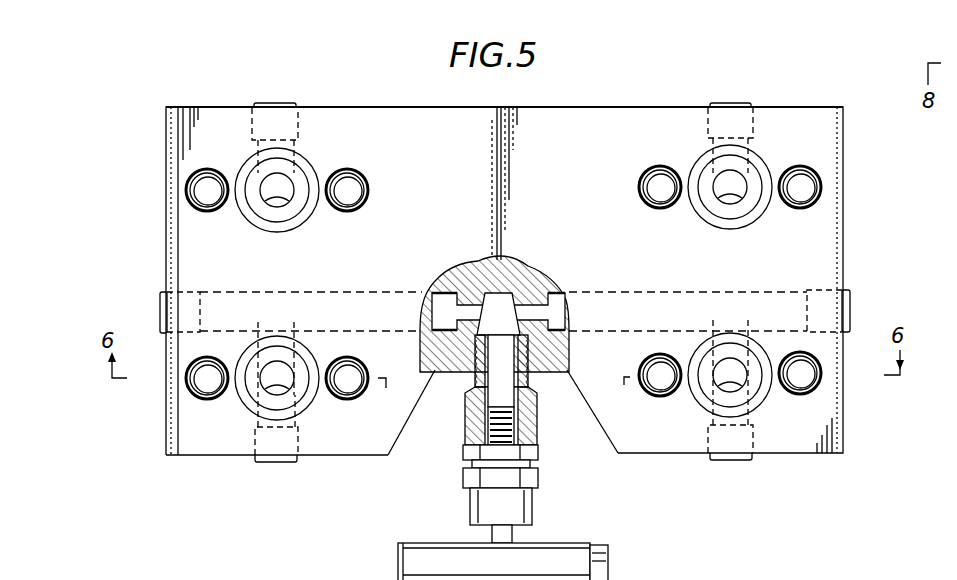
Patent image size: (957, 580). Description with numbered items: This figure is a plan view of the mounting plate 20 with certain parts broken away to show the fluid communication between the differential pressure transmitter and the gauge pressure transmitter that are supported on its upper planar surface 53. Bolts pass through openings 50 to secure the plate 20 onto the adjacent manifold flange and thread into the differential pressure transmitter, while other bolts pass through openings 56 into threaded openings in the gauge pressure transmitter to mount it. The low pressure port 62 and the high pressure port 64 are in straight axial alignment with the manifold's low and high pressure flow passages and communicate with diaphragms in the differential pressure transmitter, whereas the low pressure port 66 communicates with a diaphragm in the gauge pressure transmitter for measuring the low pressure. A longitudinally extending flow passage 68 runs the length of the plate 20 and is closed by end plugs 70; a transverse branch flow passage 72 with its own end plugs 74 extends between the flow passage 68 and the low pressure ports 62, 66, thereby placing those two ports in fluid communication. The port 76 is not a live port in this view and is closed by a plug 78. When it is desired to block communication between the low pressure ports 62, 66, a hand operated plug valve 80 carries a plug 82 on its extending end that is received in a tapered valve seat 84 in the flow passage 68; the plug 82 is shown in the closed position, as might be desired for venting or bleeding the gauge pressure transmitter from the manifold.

The mounting plate 20 is at (848, 237).
The openings 50 is at (803, 177).
The upper planar surface 53 is at (584, 170).
The openings 56 is at (220, 196).
The low pressure port 62 is at (717, 385).
The high pressure port 64 is at (723, 200).
The low pressure port 66 is at (270, 393).
The longitudinally extending flow passage 68 is at (721, 293).
The end plugs 70 is at (162, 306).
The transverse branch flow passage 72 is at (295, 327).
The end plugs 74 is at (275, 462).
The port 76 is at (293, 175).
The plug 78 is at (277, 200).
The hand operated plug valve 80 is at (468, 506).
The plug 82 is at (488, 290).
The tapered valve seat 84 is at (530, 272).